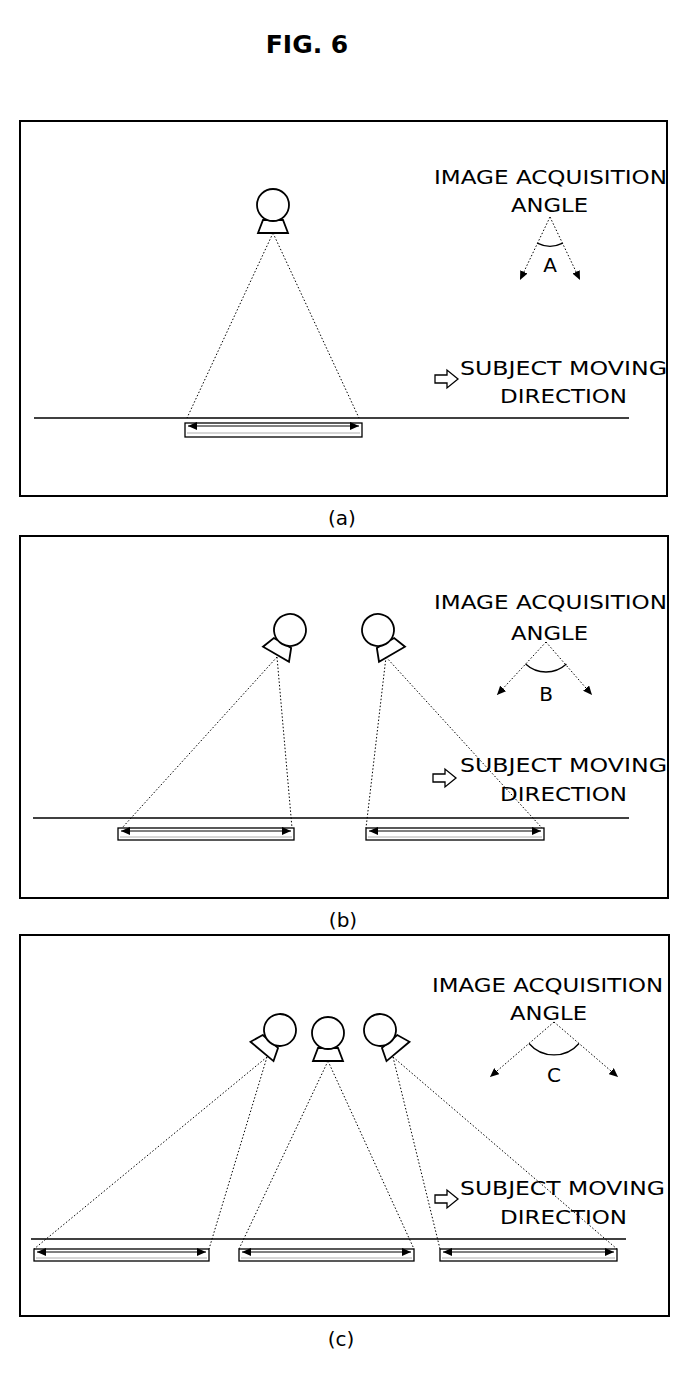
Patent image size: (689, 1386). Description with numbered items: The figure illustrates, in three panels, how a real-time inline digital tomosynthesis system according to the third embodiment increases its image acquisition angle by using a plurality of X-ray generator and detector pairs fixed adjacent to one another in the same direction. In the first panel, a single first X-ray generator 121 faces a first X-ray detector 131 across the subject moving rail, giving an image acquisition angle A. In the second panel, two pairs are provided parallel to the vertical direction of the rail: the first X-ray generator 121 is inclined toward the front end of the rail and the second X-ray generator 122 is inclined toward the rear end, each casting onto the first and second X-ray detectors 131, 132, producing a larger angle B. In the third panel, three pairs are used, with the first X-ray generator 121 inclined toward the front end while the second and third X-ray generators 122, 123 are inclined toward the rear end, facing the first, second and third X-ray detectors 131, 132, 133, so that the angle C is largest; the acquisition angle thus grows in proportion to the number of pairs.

The first X-ray generator 121 is at (274, 188).
The second X-ray generator 122 is at (377, 614).
The third X-ray generator 123 is at (378, 1013).
The first X-ray detector 131 is at (275, 438).
The second X-ray detector 132 is at (477, 841).
The third X-ray detector 133 is at (526, 1262).